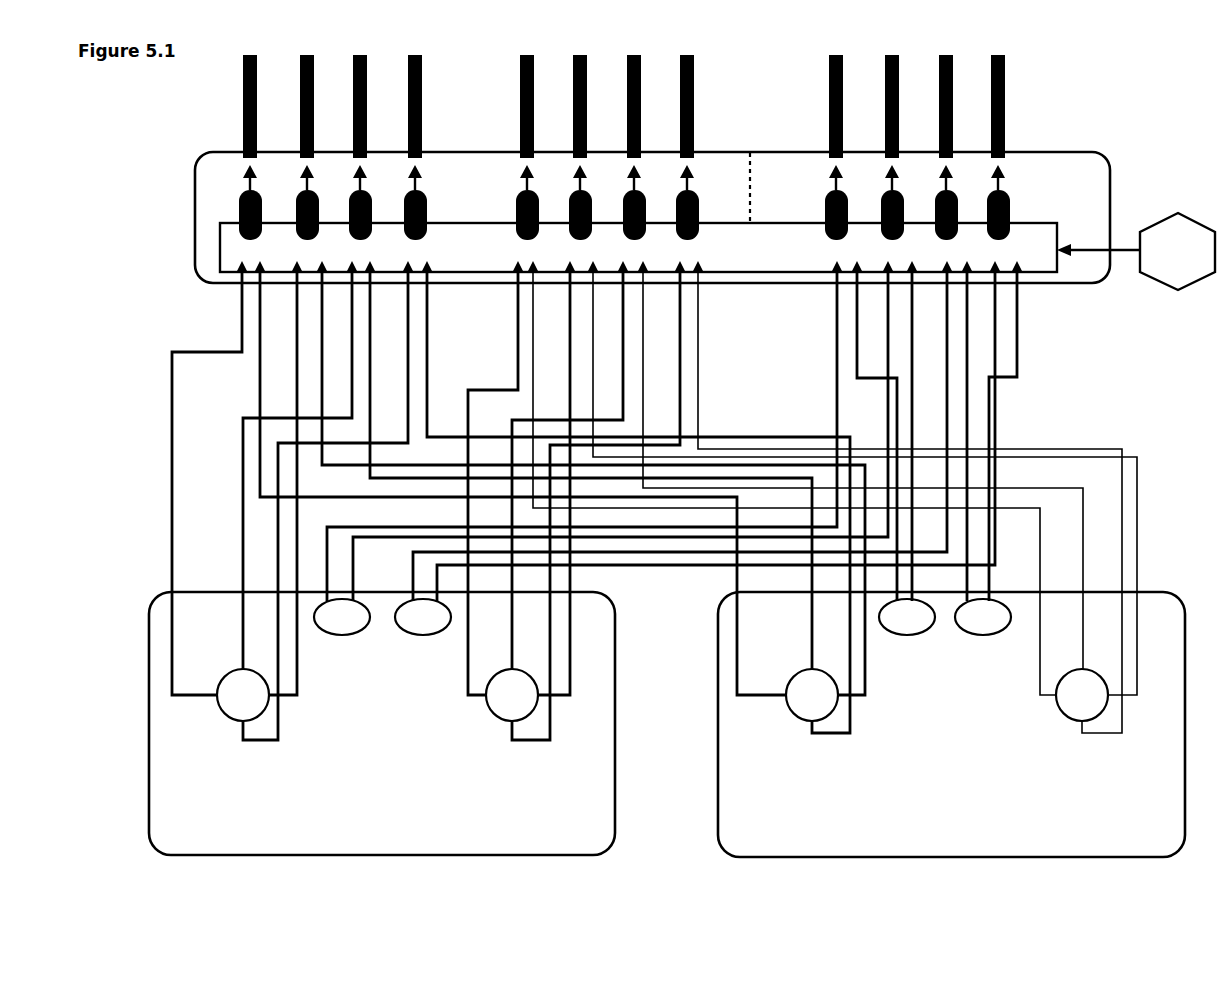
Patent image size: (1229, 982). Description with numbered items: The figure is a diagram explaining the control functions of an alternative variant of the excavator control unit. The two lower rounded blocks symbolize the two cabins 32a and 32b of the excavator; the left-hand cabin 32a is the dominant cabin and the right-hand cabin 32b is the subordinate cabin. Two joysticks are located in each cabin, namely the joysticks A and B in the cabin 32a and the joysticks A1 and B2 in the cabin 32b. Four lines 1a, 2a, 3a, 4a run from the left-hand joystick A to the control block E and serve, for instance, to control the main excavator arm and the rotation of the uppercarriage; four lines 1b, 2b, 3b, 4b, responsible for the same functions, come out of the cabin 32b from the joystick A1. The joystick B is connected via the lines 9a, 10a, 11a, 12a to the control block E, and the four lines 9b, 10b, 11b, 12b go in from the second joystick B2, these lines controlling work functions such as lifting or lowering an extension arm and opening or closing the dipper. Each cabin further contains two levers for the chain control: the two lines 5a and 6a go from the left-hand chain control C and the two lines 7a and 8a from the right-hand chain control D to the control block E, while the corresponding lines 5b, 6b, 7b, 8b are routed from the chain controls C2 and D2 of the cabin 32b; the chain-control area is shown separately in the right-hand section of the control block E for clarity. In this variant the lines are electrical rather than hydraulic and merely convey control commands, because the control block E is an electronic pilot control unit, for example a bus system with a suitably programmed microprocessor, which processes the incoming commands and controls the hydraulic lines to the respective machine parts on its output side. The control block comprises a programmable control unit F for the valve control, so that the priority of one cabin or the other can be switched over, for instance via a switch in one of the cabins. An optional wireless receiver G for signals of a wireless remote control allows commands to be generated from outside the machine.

The electrical line 1a is at (207, 483).
The electrical line 1b is at (523, 483).
The electrical line 2a is at (289, 470).
The electrical line 2b is at (591, 470).
The electrical line 3a is at (292, 483).
The electrical line 3b is at (604, 483).
The electrical line 4a is at (325, 516).
The electrical line 4b is at (638, 516).
The electrical line 5a is at (574, 436).
The electrical line 5b is at (877, 436).
The electrical line 6a is at (620, 436).
The electrical line 6b is at (923, 436).
The electrical line 7a is at (671, 436).
The electrical line 7b is at (965, 436).
The electrical line 8a is at (716, 436).
The electrical line 8b is at (1016, 436).
The electrical line 9a is at (485, 483).
The electrical line 9b is at (794, 483).
The electrical line 10a is at (557, 470).
The electrical line 10b is at (854, 470).
The electrical line 11a is at (578, 483).
The electrical line 11b is at (879, 483).
The electrical line 12a is at (596, 516).
The electrical line 12b is at (910, 516).
The joystick A is at (243, 695).
The joystick B is at (512, 695).
The chain control lever C is at (342, 617).
The chain control lever D is at (423, 617).
The joystick A1 is at (812, 695).
The joystick B2 is at (1082, 695).
The chain control lever C2 is at (907, 617).
The chain control lever D2 is at (983, 617).
The control block E is at (630, 217).
The programmable control unit F is at (755, 209).
The wireless receiver G is at (1136, 251).
The cabin 32a is at (382, 723).
The cabin 32b is at (951, 724).